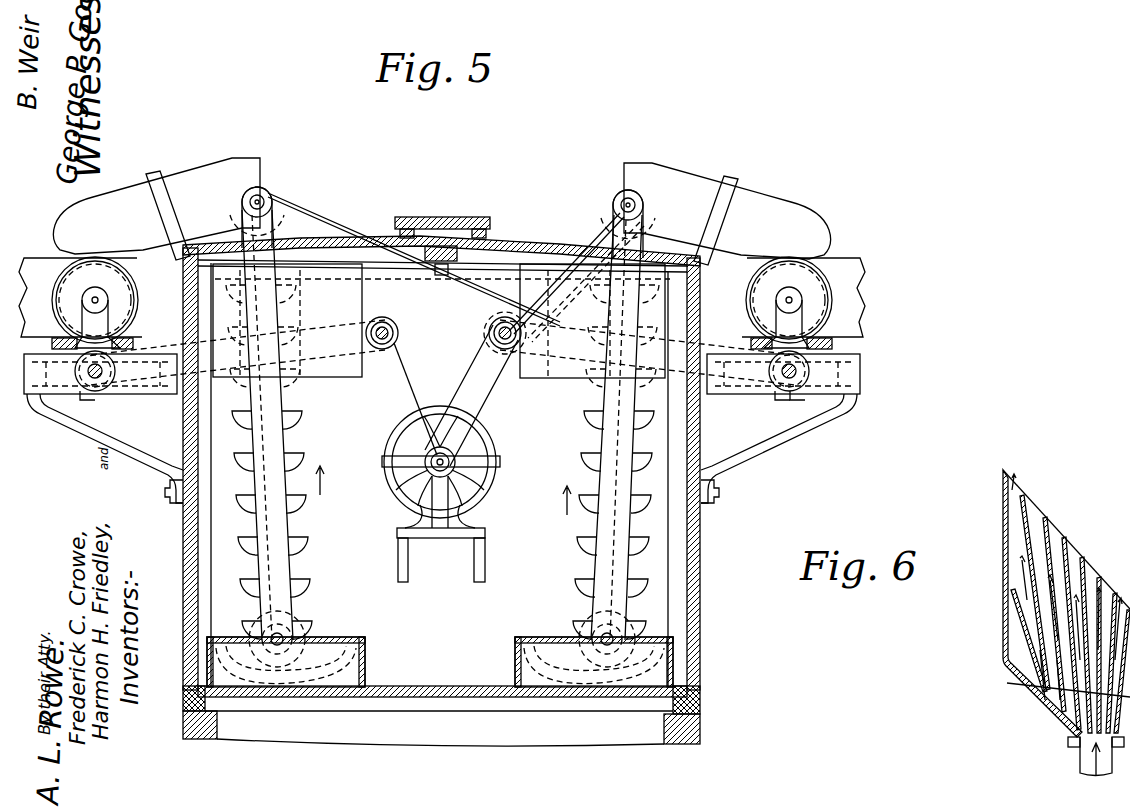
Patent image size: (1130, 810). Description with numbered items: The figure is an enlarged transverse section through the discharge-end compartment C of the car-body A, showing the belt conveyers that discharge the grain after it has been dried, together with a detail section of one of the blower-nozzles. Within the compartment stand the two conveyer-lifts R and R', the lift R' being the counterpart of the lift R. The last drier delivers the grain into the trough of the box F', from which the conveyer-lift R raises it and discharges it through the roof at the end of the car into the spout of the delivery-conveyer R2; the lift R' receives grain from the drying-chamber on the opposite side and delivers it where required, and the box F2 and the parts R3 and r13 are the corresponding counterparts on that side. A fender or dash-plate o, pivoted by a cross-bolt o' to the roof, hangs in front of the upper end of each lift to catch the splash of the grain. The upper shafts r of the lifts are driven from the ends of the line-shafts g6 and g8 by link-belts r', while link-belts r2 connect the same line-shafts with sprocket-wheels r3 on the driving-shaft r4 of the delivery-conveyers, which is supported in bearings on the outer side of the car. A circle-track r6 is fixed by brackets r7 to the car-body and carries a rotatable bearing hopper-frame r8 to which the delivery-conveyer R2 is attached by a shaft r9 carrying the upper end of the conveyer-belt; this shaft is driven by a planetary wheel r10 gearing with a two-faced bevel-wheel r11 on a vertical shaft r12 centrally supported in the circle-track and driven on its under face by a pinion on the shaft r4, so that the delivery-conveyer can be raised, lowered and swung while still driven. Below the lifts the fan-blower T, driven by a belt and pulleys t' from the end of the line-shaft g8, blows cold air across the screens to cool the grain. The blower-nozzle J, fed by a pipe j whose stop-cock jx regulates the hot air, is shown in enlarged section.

In FIG. 5, the car-body A is at (183, 445).
In FIG. 5, the discharge-end compartment C is at (441, 666).
In FIG. 5, the cross-bolt o' is at (442, 281).
In FIG. 5, the fender or dash-plate o is at (439, 334).
In FIG. 5, the conveyer-lift R' is at (286, 448).
In FIG. 5, the conveyer-lift R is at (594, 451).
In FIG. 5, the left trough F2 is at (334, 637).
In FIG. 5, the box F' is at (594, 649).
In FIG. 5, the upper shafts r is at (444, 215).
In FIG. 5, the link-belts r' is at (456, 267).
In FIG. 5, the line-shaft g6 is at (498, 333).
In FIG. 5, the line-shaft g8 is at (503, 346).
In FIG. 5, the link-belts r2 is at (680, 386).
In FIG. 5, the belt and pulleys t' is at (471, 395).
In FIG. 5, the fan-blower T is at (486, 478).
In FIG. 5, the arm R3 is at (441, 211).
In FIG. 5, the delivery-conveyer R2 is at (846, 300).
In FIG. 5, the planetary wheel r10 is at (442, 300).
In FIG. 5, the shaft r9 is at (776, 300).
In FIG. 5, the rotatable bearing hopper-frame r8 is at (792, 322).
In FIG. 5, the two-faced bevel-wheel r11 is at (834, 345).
In FIG. 5, the driving-shaft r4 is at (810, 372).
In FIG. 5, the circle-track r6 is at (836, 386).
In FIG. 5, the brackets r7 is at (780, 446).
In FIG. 5, the sprocket-wheels r3 is at (777, 400).
In FIG. 5, the vertical shaft r12 is at (798, 400).
In FIG. 5, the bearing piece r13 is at (90, 392).
In FIG. 6, the blower-nozzle J is at (1004, 600).
In FIG. 6, the stop-cocks jx is at (1072, 552).
In FIG. 6, the pipes j is at (1078, 765).